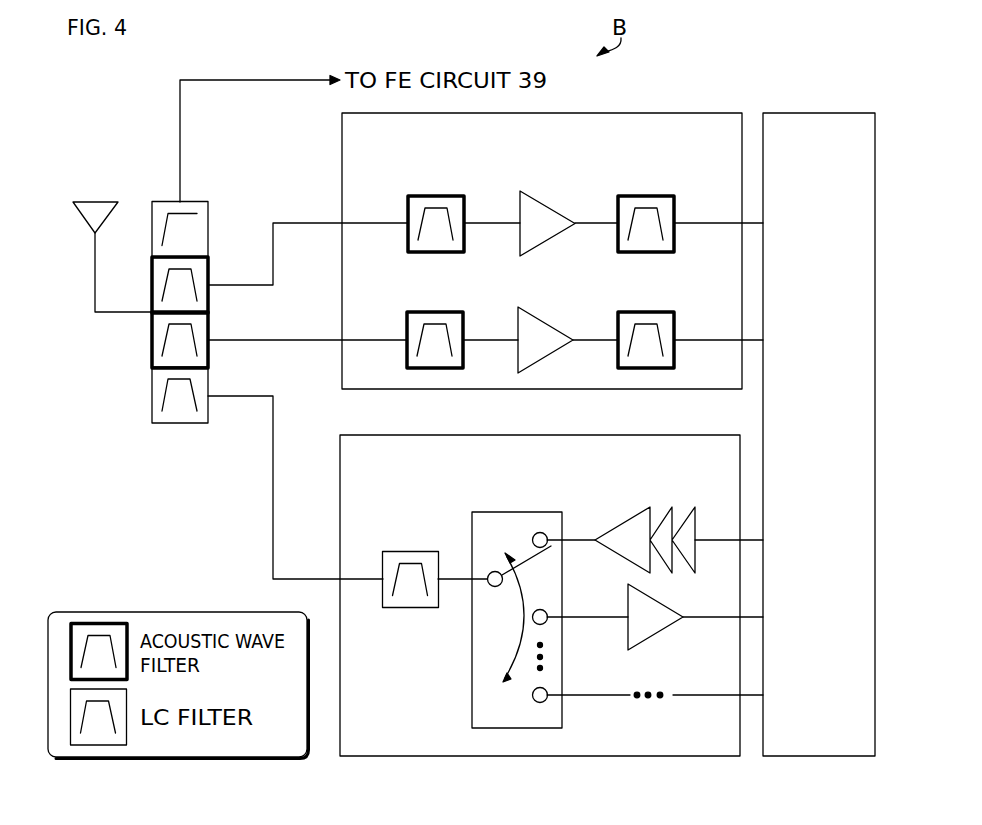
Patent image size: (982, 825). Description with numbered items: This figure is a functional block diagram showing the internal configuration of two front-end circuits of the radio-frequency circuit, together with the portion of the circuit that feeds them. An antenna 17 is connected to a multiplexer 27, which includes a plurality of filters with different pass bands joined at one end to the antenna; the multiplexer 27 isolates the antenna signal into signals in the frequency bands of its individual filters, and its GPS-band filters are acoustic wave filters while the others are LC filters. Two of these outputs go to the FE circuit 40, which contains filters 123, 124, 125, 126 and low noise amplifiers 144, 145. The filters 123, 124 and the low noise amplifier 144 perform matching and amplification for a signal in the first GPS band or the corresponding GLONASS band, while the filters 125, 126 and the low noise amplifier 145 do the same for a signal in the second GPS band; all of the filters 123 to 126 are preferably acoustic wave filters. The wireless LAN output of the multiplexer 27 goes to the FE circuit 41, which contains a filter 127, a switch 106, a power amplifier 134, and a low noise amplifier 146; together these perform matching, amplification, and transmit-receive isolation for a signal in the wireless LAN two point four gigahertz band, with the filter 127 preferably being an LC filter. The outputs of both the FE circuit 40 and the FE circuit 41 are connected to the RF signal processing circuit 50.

The antenna 17 is at (90, 202).
The multiplexer 27 is at (194, 294).
The FE circuit 40 is at (542, 236).
The FE circuit 41 is at (540, 581).
The RF signal processing circuit 50 is at (822, 113).
The switch 106 is at (485, 512).
The filter 123 is at (463, 185).
The filter 124 is at (673, 185).
The filter 125 is at (462, 302).
The filter 126 is at (673, 302).
The filter 127 is at (410, 539).
The power amplifier 134 is at (625, 518).
The low noise amplifier 144 is at (572, 185).
The low noise amplifier 145 is at (570, 302).
The low noise amplifier 146 is at (652, 596).